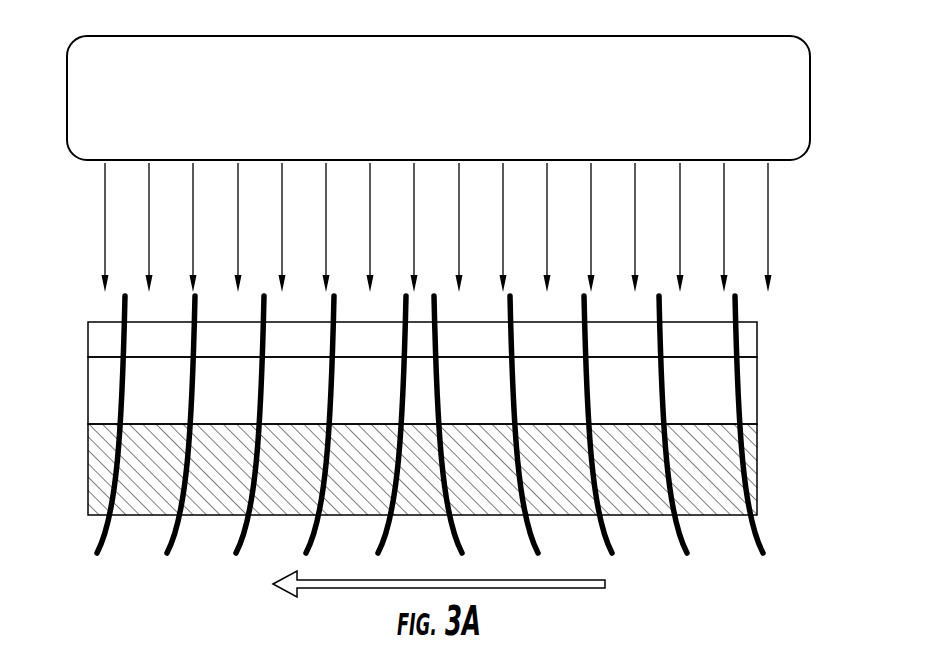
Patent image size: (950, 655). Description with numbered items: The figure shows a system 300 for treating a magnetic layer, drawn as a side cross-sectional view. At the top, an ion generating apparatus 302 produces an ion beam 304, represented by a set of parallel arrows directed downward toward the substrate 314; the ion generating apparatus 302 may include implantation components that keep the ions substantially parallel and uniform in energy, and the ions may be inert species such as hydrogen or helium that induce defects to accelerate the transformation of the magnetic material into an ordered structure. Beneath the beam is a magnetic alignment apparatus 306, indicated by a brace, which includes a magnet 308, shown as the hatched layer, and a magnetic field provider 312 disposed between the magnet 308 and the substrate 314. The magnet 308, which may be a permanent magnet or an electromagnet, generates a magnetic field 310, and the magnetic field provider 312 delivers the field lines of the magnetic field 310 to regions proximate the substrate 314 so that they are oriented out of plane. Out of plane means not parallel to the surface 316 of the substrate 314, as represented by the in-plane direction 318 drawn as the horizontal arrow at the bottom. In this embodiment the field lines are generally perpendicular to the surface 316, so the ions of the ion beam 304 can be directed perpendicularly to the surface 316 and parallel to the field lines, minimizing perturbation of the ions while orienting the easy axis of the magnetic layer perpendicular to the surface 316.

The system 300 is at (63, 247).
The ion generating apparatus 302 is at (810, 63).
The ion beam 304 is at (792, 219).
The magnetic alignment apparatus 306 is at (70, 368).
The magnet 308 is at (758, 475).
The magnetic field 310 is at (772, 532).
The magnetic field provider 312 is at (758, 400).
The substrate 314 is at (758, 341).
The surface of the substrate 316 is at (742, 311).
The in-plane direction 318 is at (592, 580).